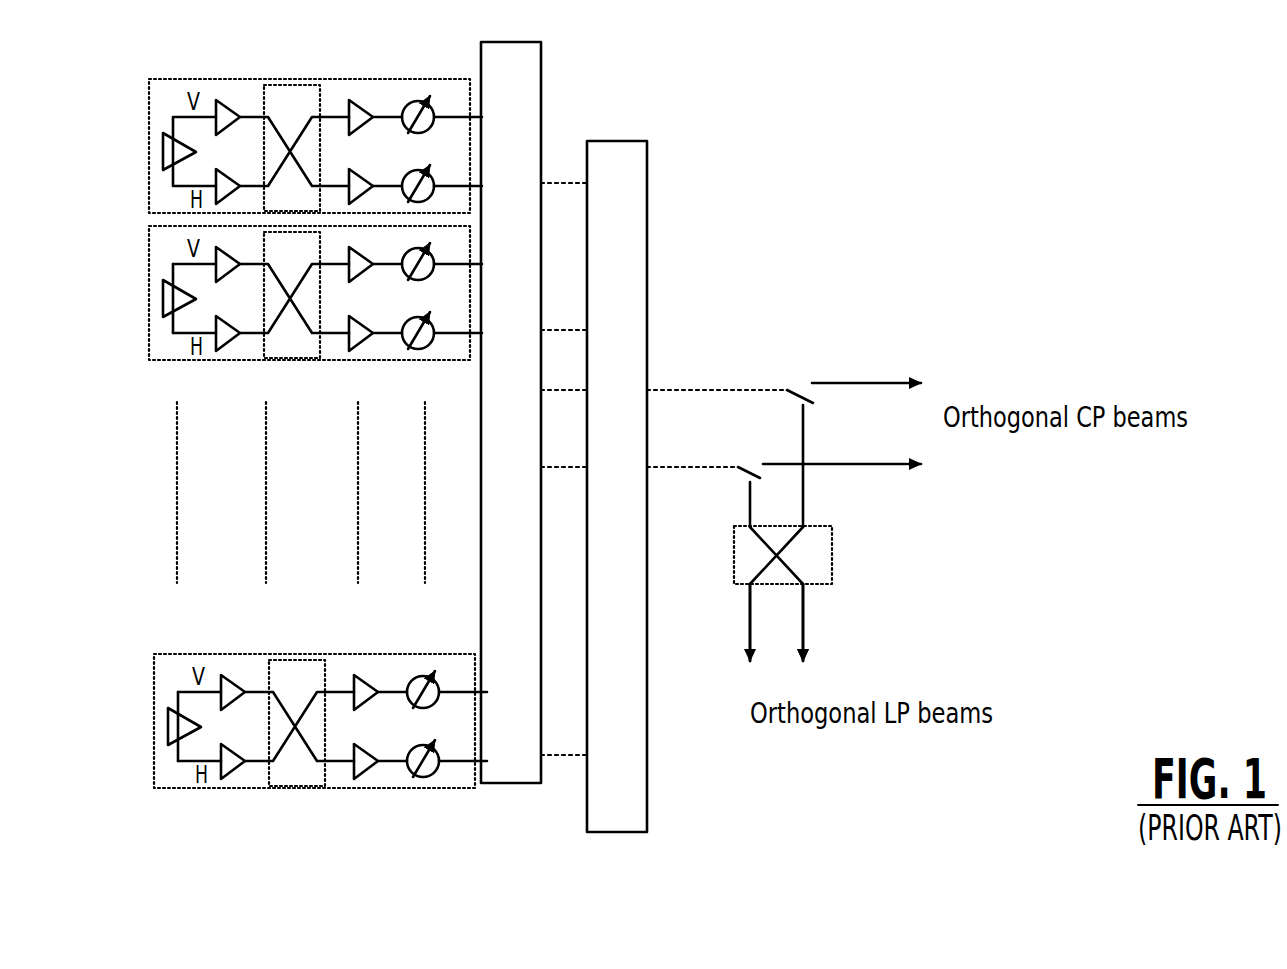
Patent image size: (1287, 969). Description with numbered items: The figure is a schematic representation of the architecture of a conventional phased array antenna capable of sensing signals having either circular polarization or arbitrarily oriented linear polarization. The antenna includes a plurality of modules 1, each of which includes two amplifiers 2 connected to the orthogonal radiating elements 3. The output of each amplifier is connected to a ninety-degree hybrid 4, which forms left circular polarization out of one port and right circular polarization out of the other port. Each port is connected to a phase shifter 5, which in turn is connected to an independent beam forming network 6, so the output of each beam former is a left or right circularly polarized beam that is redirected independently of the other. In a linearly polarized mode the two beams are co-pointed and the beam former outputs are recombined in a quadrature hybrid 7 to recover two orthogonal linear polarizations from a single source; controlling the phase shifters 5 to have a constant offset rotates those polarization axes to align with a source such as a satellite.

The module 1 is at (187, 75).
The amplifiers 2 is at (233, 132).
The orthogonal radiating elements 3 is at (161, 164).
The 90° hybrid 4 is at (284, 100).
The phase shifter 5 is at (439, 776).
The beam forming network 6 is at (624, 138).
The quadrature hybrid 7 is at (852, 558).